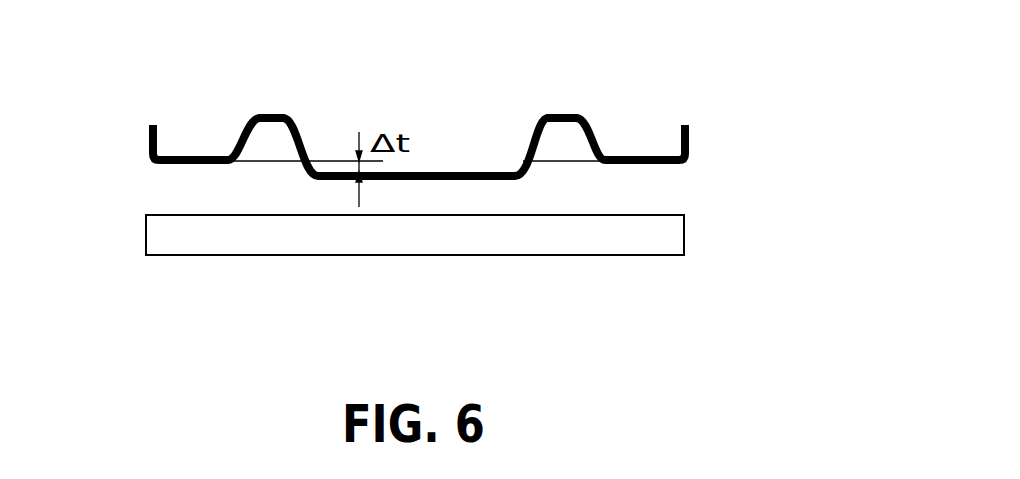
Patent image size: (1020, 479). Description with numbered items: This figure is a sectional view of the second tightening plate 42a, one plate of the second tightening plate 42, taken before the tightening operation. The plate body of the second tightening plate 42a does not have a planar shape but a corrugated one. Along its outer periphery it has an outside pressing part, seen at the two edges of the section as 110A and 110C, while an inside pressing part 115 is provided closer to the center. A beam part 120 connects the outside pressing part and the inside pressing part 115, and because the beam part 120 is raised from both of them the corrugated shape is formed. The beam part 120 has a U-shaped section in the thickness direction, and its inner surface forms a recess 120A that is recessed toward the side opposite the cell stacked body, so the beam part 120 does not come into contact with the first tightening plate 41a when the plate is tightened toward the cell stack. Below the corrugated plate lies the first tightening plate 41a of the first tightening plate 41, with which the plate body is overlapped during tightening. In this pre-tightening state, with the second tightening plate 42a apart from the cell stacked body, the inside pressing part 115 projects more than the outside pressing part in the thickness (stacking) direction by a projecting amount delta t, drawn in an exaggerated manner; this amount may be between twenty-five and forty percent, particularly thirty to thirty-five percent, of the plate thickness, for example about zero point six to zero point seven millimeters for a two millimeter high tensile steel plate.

The beam part 120 is at (425, 179).
The recess 120A is at (248, 137).
The inside pressing part 115 is at (412, 180).
The left end flange portion of workpiece 110A is at (182, 165).
The right end flange portion of workpiece 110C is at (657, 165).
The second tightening plate 42a is at (796, 112).
The second tightening plate 42 is at (713, 132).
The first tightening plate 41a is at (500, 235).
The first tightening plate 41 is at (684, 230).